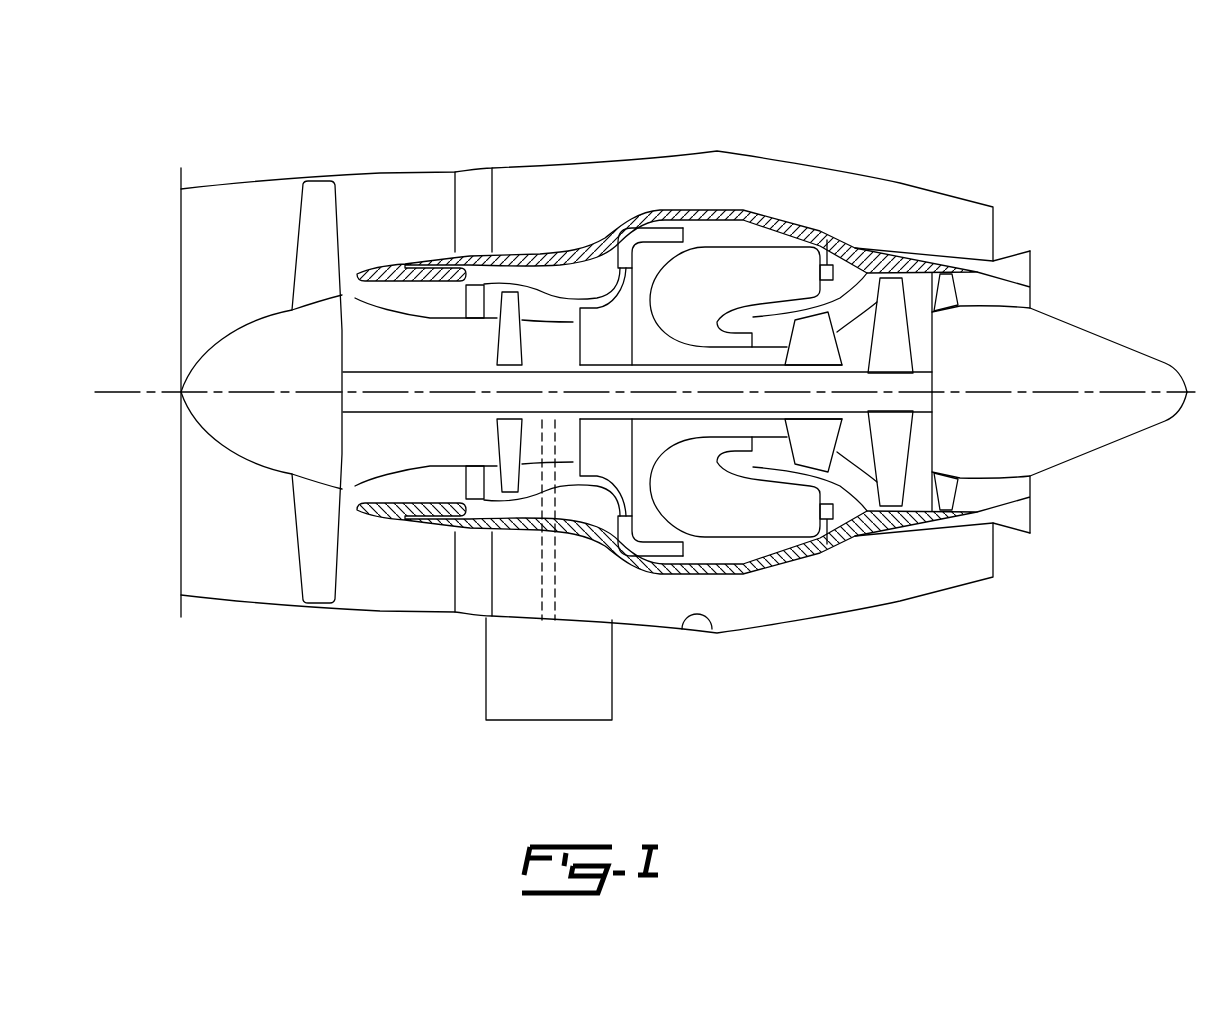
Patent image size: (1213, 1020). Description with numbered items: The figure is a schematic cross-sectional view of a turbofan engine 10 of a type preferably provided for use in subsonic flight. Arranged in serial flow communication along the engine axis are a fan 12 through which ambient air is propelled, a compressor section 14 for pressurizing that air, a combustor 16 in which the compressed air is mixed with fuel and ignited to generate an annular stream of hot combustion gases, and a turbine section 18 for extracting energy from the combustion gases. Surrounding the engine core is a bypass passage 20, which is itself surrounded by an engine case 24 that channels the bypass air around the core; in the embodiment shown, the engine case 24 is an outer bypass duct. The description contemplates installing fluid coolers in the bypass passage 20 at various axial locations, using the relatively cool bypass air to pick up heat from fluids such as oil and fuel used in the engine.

The turbofan engine 10 is at (645, 379).
The fan 12 is at (313, 530).
The compressor section 14 is at (541, 300).
The combustor 16 is at (735, 265).
The turbine section 18 is at (853, 450).
The bypass passage 20 is at (588, 190).
The engine case 24 is at (712, 630).